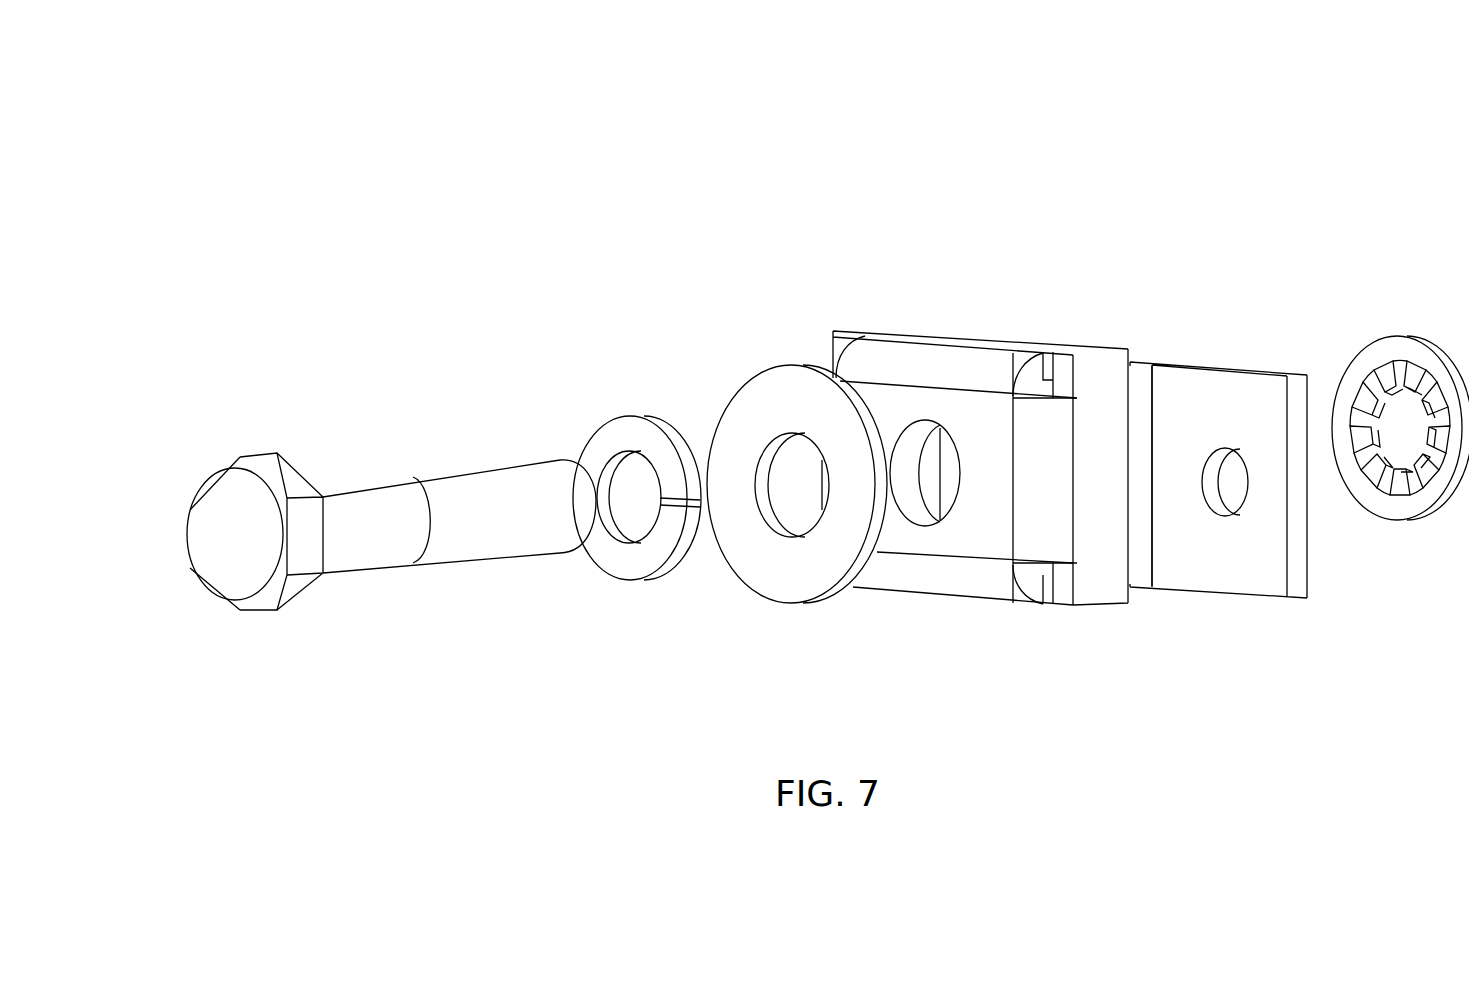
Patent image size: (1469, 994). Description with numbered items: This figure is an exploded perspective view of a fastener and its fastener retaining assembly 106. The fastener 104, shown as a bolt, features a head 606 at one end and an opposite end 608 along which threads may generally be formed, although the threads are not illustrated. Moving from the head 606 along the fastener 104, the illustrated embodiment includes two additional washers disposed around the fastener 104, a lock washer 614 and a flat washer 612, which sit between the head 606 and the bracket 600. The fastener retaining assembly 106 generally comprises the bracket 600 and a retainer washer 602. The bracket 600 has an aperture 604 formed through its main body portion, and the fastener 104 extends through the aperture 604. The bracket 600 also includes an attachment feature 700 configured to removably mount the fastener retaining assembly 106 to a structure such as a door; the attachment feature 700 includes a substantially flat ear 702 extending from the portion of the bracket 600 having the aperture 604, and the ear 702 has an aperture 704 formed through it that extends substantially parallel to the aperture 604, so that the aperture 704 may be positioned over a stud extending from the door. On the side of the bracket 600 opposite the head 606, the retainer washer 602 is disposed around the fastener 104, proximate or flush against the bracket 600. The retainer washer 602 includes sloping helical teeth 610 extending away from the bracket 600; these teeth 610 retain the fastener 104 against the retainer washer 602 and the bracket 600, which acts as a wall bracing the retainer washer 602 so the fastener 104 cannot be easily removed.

The fastener retaining assembly 106 is at (522, 115).
The fastener 104 is at (362, 473).
The head 606 is at (248, 498).
The end 608 is at (542, 467).
The lock washer 614 is at (628, 568).
The flat washer 612 is at (762, 568).
The aperture 604 is at (908, 427).
The bracket 600 is at (862, 356).
The attachment feature 700 is at (1211, 492).
The ear 702 is at (1192, 387).
The aperture 704 is at (1207, 458).
The retainer washer 602 is at (1399, 401).
The teeth 610 is at (1405, 483).